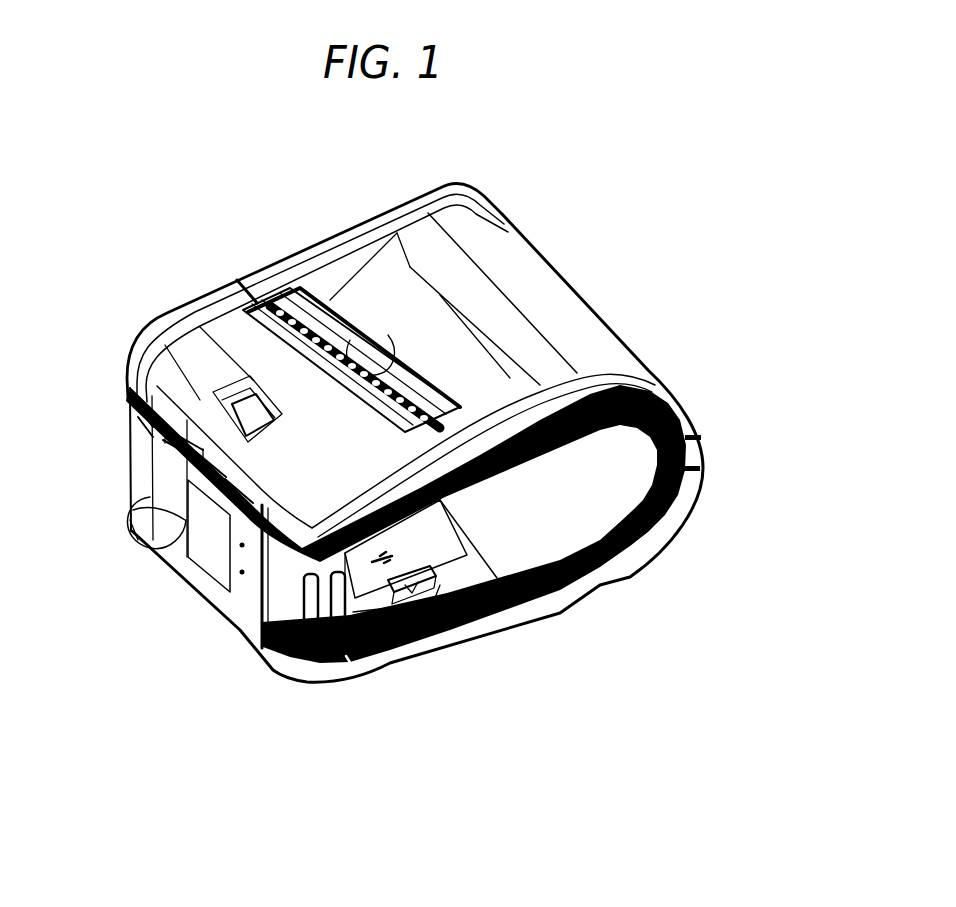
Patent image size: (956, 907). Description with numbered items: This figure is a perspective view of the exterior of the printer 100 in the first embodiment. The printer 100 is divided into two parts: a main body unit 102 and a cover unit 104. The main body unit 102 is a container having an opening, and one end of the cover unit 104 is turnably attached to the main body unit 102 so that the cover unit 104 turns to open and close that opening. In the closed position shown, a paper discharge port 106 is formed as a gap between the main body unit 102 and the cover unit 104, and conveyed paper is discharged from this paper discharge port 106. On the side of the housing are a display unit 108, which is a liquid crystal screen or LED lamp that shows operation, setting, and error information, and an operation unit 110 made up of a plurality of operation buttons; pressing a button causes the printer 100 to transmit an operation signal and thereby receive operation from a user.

The printer 100 is at (211, 229).
The main body unit 102 is at (362, 670).
The cover unit 104 is at (570, 292).
The paper discharge port 106 is at (350, 340).
The display unit 108 is at (143, 527).
The operation unit 110 is at (153, 458).